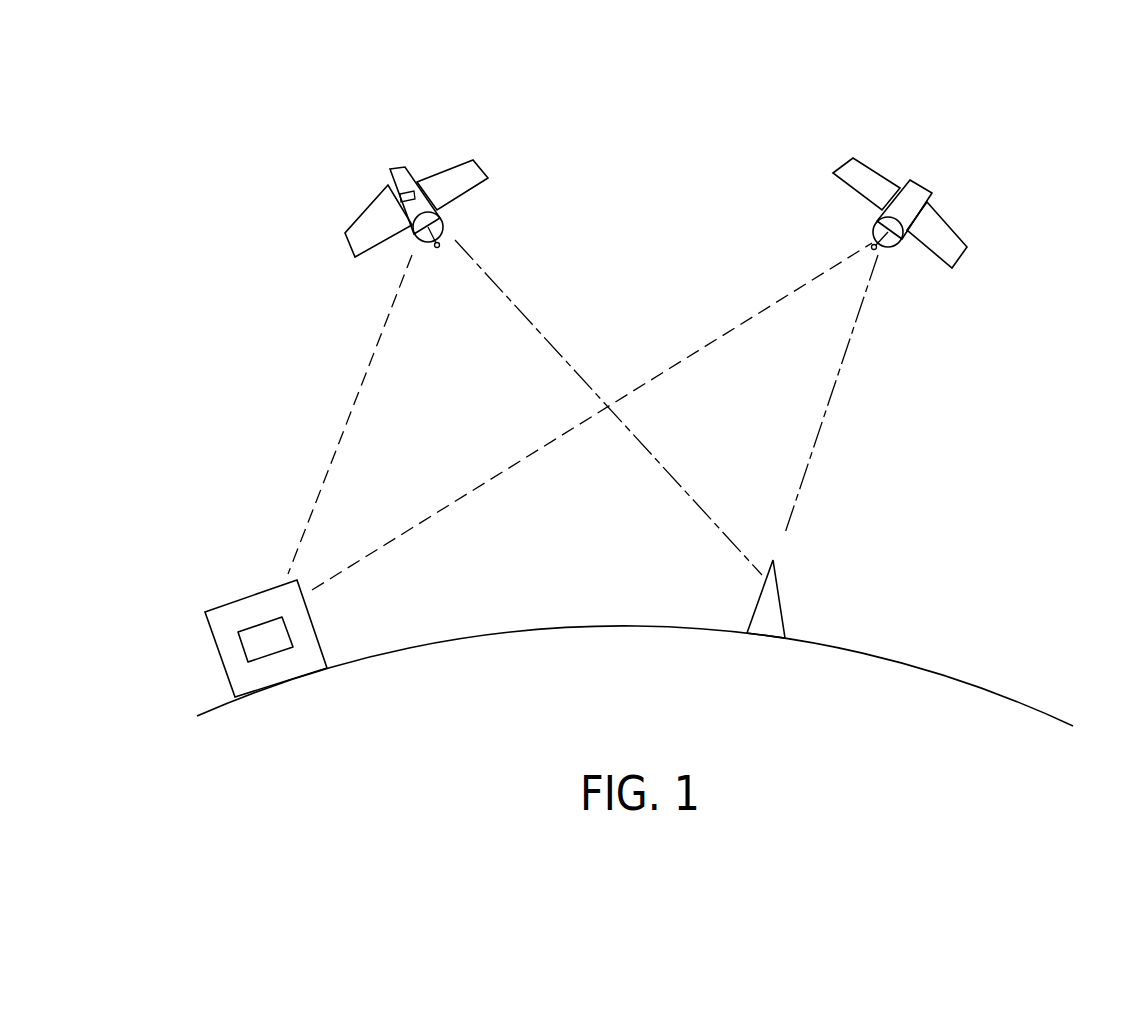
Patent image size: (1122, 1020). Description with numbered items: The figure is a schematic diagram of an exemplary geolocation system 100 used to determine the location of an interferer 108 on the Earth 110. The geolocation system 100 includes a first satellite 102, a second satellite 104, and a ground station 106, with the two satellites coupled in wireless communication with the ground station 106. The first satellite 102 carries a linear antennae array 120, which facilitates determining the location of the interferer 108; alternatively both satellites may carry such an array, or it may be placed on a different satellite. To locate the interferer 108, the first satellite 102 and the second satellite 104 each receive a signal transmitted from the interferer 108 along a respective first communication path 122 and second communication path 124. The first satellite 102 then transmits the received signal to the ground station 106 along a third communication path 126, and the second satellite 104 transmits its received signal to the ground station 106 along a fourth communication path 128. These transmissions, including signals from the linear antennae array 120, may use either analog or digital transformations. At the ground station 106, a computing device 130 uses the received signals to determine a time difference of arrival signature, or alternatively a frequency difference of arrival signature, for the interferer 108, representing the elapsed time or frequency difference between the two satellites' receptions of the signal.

The geolocation system 100 is at (826, 80).
The first satellite 102 is at (397, 167).
The second satellite 104 is at (930, 180).
The ground station 106 is at (240, 600).
The interferer 108 is at (768, 603).
The Earth 110 is at (597, 700).
The linear antennae array 120 is at (400, 191).
The first communication path 122 is at (498, 288).
The second communication path 124 is at (842, 368).
The third communication path 126 is at (363, 380).
The fourth communication path 128 is at (778, 298).
The computing device 130 is at (253, 647).